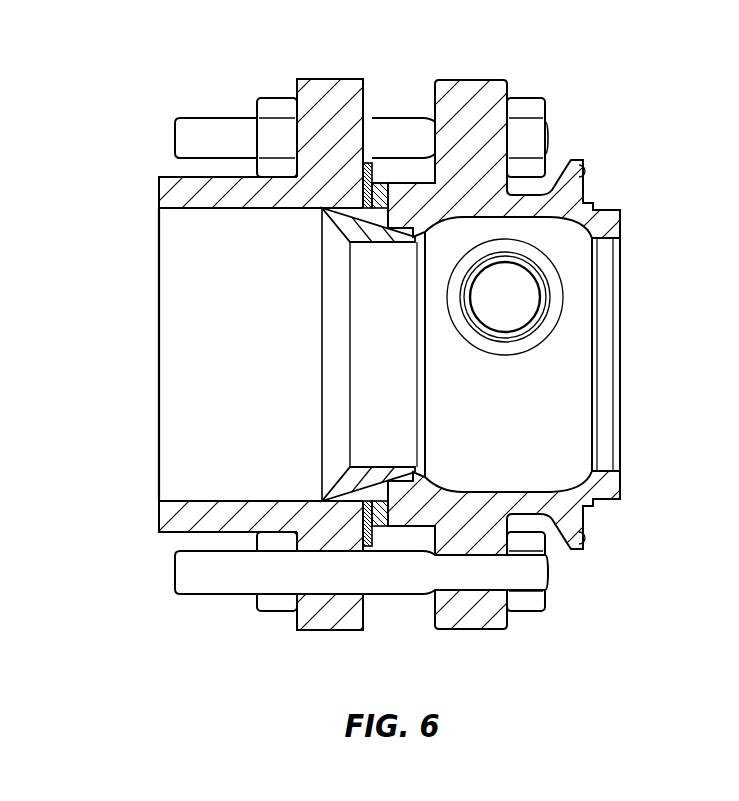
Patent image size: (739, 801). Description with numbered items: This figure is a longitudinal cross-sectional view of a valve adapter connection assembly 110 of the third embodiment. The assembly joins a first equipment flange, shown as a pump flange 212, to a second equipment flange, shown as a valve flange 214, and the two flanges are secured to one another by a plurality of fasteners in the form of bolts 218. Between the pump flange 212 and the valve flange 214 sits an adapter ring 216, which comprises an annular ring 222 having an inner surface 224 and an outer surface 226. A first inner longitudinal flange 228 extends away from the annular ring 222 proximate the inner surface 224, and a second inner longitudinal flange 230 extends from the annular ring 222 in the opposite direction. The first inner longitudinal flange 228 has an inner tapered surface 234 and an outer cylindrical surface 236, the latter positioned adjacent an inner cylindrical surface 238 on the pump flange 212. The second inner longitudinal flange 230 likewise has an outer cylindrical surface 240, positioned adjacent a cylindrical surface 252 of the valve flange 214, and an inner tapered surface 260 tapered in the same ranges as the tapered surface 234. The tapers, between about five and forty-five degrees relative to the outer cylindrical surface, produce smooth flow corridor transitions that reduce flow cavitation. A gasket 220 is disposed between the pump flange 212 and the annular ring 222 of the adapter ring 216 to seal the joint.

The flange assembly 110 is at (96, 93).
The pump flange 212 is at (330, 88).
The valve flange 214 is at (487, 100).
The adapter ring 216 is at (367, 310).
The bolts 218 is at (201, 128).
The gasket 220 is at (378, 196).
The annular ring 222 is at (410, 222).
The inner surface 224 is at (385, 243).
The outer surface 226 is at (388, 198).
The first inner longitudinal flange 228 is at (293, 155).
The second inner longitudinal flange 230 is at (424, 222).
The tapered surface 234 is at (343, 226).
The outer cylindrical surface 236 is at (368, 185).
The inner cylindrical surface 238 is at (249, 209).
The outer cylindrical surface 240 is at (403, 474).
The cylindrical surface 252 is at (580, 484).
The inner tapered surface 260 is at (423, 474).